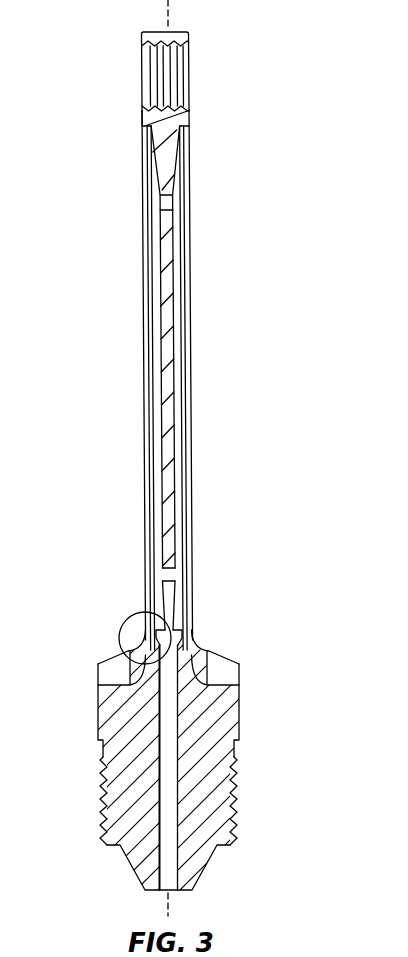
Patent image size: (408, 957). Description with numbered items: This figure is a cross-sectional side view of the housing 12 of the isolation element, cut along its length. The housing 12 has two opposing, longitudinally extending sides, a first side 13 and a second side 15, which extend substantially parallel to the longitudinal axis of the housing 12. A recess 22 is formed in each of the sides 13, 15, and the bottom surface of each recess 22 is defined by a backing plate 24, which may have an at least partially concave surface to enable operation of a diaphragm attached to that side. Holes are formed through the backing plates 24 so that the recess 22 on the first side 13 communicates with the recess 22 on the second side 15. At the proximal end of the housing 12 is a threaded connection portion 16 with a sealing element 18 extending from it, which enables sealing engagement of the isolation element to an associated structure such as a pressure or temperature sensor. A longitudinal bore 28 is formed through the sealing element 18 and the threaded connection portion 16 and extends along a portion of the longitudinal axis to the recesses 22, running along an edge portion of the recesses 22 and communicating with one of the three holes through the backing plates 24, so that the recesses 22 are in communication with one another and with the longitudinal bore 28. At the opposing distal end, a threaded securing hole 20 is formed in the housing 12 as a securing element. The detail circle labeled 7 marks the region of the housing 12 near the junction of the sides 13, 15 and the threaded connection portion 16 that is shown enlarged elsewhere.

The housing 12 is at (308, 396).
The first side 13 is at (143, 118).
The second side 15 is at (190, 118).
The threaded connection portion 16 is at (238, 805).
The sealing element 18 is at (212, 865).
The threaded securing hole 20 is at (178, 75).
The recess 22 is at (157, 398).
The backing plate 24 is at (160, 262).
The longitudinal bore 28 is at (163, 712).
The section detail 7 is at (136, 608).